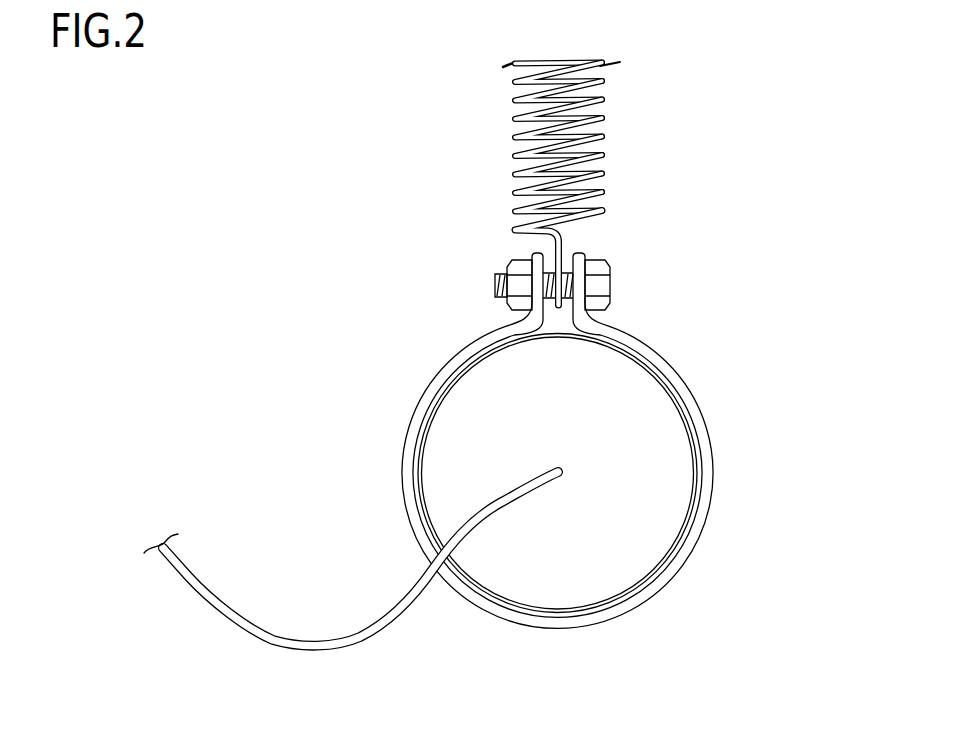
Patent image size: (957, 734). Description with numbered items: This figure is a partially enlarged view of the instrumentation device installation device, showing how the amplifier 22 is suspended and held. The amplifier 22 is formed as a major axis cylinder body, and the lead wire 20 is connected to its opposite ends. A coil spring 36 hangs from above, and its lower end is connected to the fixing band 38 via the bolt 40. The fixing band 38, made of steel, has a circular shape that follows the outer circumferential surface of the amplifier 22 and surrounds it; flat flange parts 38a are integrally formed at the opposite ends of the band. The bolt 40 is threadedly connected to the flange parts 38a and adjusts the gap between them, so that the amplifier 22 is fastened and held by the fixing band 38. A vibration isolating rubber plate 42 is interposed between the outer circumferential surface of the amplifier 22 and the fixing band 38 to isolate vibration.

The lead wire 20 is at (238, 617).
The amplifier 22 is at (640, 552).
The coil spring 36 is at (594, 183).
The fixing band 38 is at (585, 440).
The flange part 38a is at (584, 244).
The bolt 40 is at (612, 281).
The vibration isolating rubber plate 42 is at (662, 375).